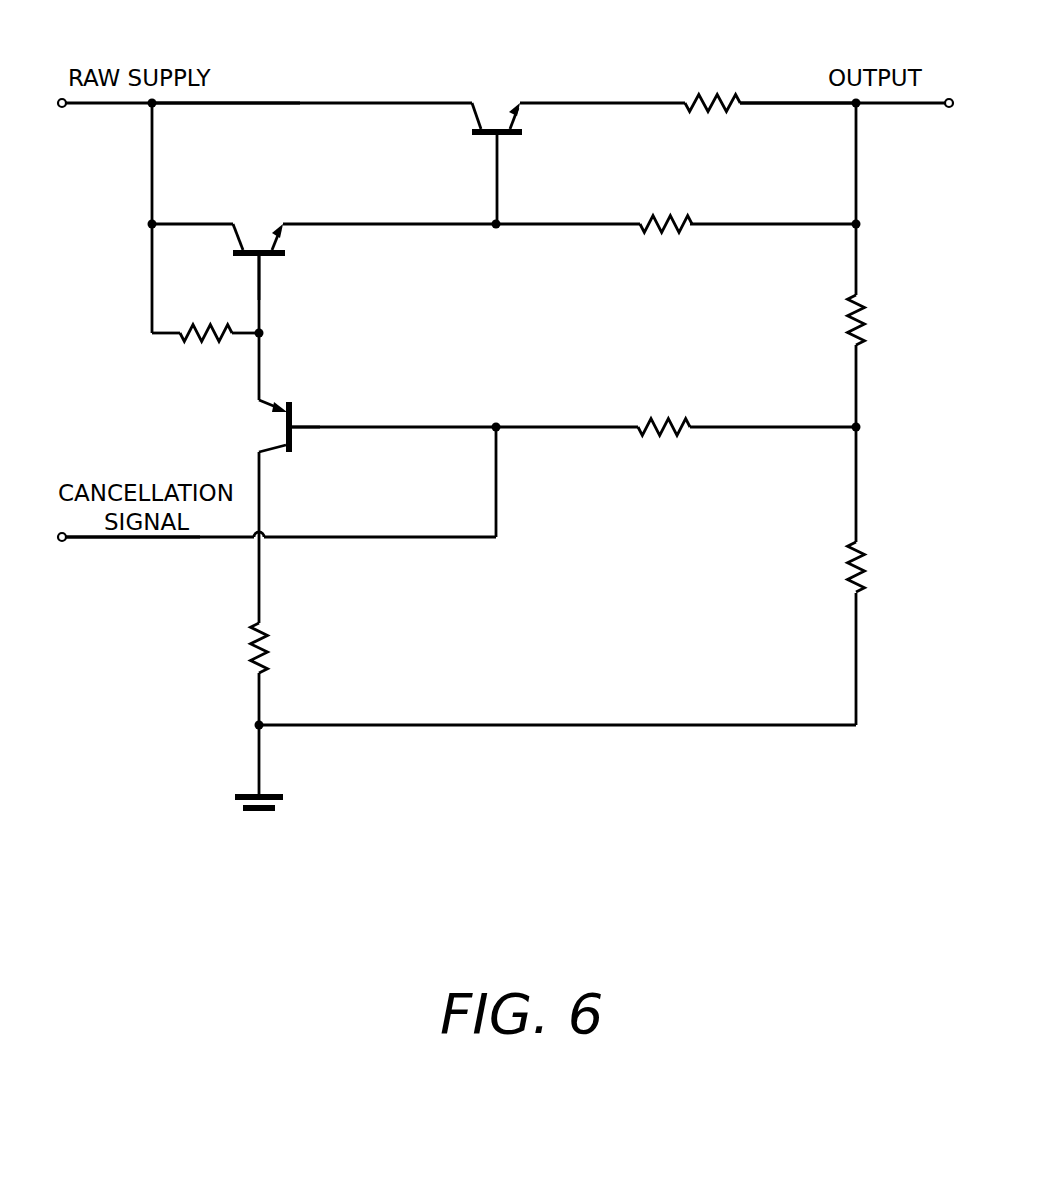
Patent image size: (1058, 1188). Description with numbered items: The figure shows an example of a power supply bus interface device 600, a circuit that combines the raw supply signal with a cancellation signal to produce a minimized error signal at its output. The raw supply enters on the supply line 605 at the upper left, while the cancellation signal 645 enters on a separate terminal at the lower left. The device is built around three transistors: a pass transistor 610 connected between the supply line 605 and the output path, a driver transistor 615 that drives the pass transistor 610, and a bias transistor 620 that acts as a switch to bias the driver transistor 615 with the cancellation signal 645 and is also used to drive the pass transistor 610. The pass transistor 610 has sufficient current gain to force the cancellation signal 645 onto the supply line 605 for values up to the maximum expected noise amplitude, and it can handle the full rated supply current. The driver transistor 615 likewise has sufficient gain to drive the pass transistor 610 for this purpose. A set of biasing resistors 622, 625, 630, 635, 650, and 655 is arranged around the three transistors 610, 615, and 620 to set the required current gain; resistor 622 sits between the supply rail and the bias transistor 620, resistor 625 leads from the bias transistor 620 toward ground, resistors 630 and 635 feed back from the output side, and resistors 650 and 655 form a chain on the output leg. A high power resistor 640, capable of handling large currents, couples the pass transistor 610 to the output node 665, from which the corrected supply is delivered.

The power supply bus interface device 600 is at (946, 908).
The supply line 605 is at (256, 101).
The pass transistor 610 is at (480, 112).
The driver transistor 615 is at (243, 236).
The bias transistor 620 is at (270, 416).
The resistor 622 is at (201, 345).
The resistor 625 is at (271, 650).
The resistor 630 is at (673, 418).
The resistor 635 is at (662, 236).
The high power resistor 640 is at (706, 113).
The cancellation signal 645 is at (148, 541).
The resistor 650 is at (867, 569).
The resistor 655 is at (867, 321).
The output node 665 is at (777, 101).